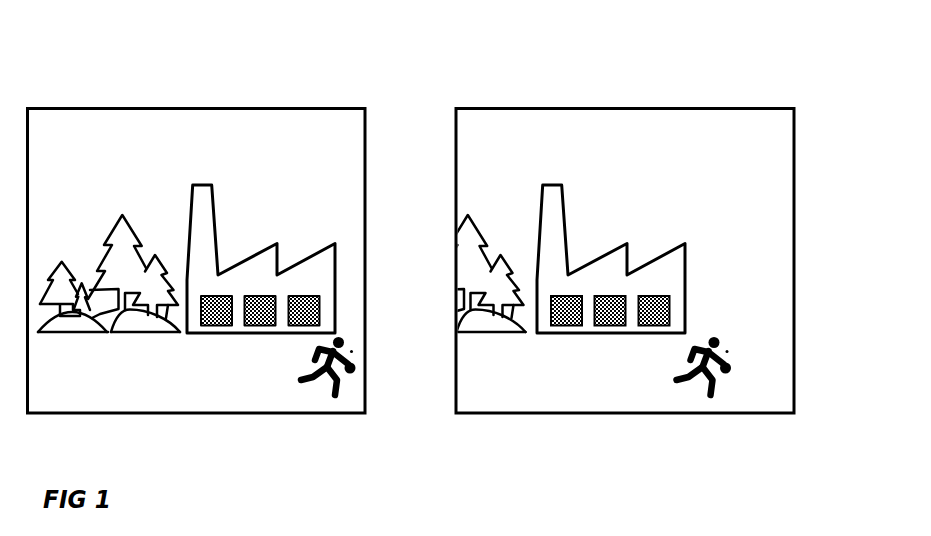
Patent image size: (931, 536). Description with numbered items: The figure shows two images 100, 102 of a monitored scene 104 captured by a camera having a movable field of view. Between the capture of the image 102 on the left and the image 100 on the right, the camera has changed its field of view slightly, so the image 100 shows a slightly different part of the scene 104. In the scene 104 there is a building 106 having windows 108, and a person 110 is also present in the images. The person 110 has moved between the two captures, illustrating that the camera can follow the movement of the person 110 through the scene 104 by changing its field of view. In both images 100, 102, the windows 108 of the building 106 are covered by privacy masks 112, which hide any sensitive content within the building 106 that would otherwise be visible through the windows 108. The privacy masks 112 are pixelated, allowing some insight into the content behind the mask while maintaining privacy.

The image 100 is at (634, 247).
The image 102 is at (157, 158).
The scene 104 is at (730, 236).
The building 106 is at (555, 183).
The windows 108 is at (566, 383).
The person 110 is at (704, 400).
The privacy masks 112 is at (568, 326).